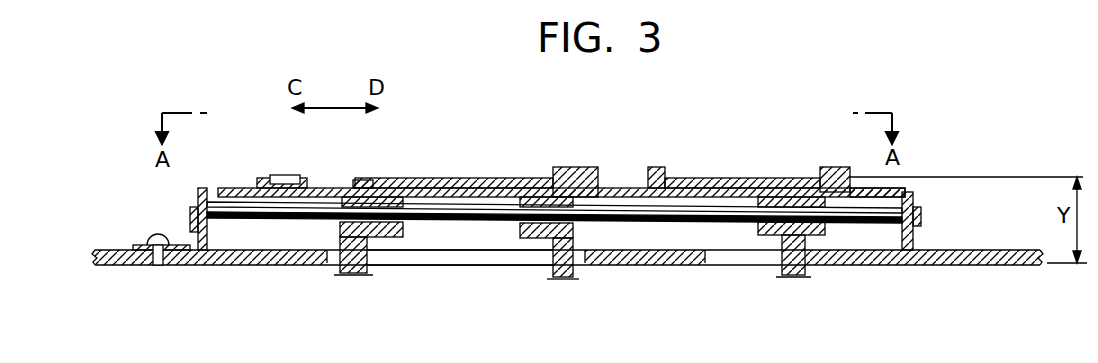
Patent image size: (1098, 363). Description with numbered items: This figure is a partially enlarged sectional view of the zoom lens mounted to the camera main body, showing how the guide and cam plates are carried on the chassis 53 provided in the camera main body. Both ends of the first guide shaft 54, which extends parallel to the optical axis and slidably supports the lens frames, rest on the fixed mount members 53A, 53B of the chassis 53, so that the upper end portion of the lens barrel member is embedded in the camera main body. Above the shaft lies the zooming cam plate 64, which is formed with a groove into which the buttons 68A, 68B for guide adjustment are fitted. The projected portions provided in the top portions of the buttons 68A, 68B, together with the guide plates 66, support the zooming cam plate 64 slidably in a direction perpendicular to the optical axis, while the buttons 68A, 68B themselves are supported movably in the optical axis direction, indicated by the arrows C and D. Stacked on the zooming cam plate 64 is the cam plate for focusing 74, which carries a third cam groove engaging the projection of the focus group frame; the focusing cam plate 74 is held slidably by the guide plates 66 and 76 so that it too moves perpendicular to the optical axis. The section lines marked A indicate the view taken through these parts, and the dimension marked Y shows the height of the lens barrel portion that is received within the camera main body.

The chassis 53 is at (985, 265).
The mount member 53A is at (190, 212).
The mount member 53B is at (922, 230).
The first guide shaft 54 is at (457, 252).
The zooming cam plate 64 is at (400, 180).
The guide plate 66 is at (585, 167).
The button for guide adjustment 68A is at (280, 176).
The button for guide adjustment 68B is at (285, 179).
The cam plate for focusing 74 is at (737, 178).
The guide plate 76 is at (900, 190).